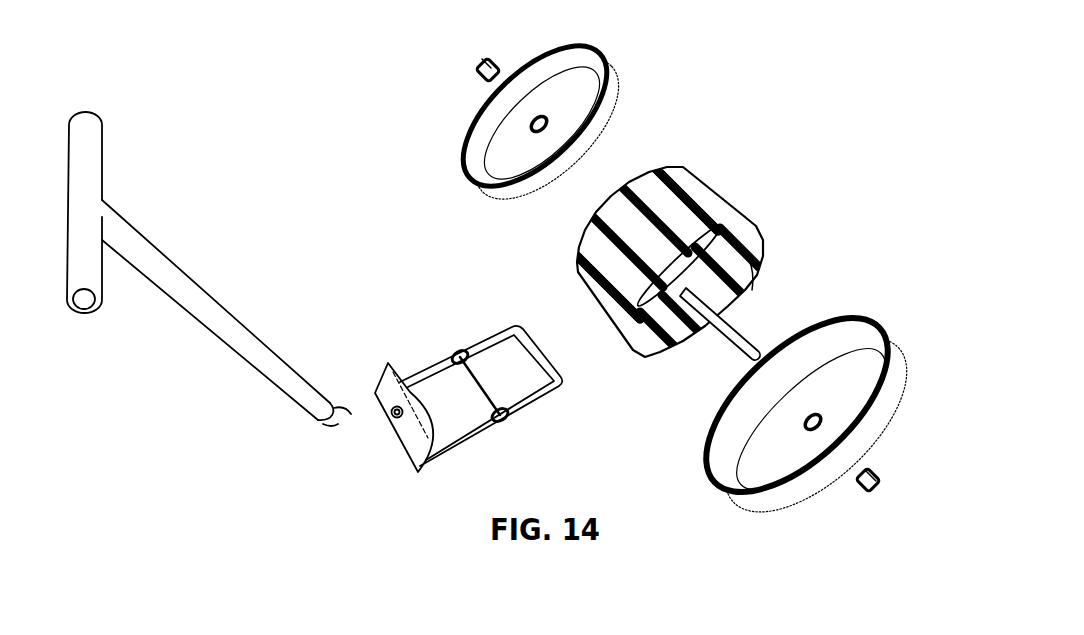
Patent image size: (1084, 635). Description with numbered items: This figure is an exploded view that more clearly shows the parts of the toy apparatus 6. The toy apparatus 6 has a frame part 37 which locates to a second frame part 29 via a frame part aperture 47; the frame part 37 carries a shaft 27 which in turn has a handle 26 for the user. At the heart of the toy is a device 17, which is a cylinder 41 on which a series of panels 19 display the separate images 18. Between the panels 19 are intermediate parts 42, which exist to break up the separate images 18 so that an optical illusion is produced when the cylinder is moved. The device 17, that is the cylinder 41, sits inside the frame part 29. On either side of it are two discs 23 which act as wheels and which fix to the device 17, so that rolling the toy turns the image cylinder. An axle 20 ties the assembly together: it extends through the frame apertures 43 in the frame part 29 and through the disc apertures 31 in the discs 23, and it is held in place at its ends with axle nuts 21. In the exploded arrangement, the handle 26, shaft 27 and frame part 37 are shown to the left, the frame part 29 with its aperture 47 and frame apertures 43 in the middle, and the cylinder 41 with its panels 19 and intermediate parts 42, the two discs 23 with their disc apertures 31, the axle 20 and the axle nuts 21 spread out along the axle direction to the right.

The toy apparatus 6 is at (372, 154).
The device 17 is at (874, 93).
The separate images 18 is at (595, 258).
The panels 19 is at (722, 213).
The axle 20 is at (744, 330).
The axle nuts 21 is at (480, 61).
The discs 23 is at (583, 86).
The handle 26 is at (87, 165).
The shaft 27 is at (210, 312).
The frame part 29 is at (468, 433).
The disc apertures 31 is at (820, 418).
The frame part 37 is at (338, 422).
The cylinder 41 is at (585, 285).
The intermediate parts 42 is at (687, 193).
The frame apertures 43 is at (457, 352).
The frame part aperture 47 is at (391, 407).